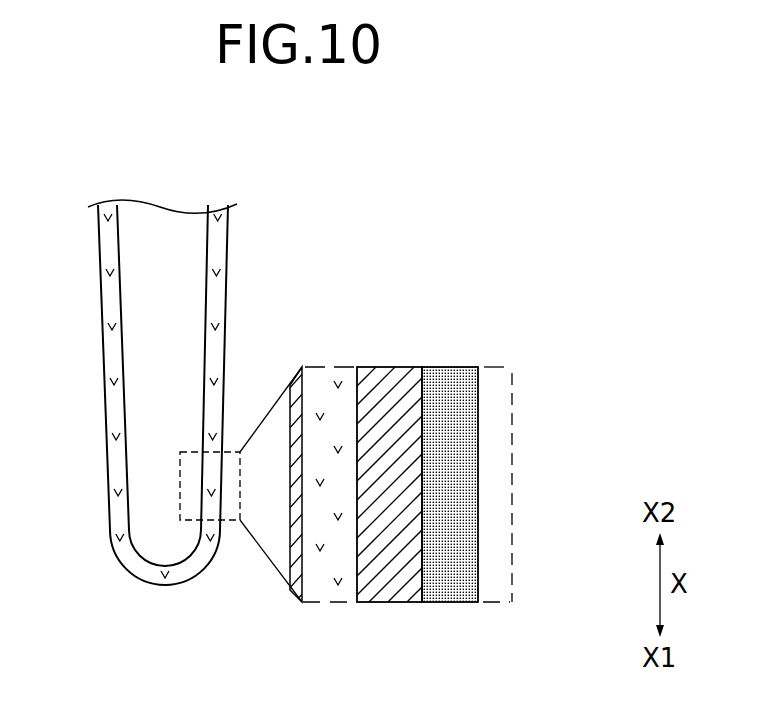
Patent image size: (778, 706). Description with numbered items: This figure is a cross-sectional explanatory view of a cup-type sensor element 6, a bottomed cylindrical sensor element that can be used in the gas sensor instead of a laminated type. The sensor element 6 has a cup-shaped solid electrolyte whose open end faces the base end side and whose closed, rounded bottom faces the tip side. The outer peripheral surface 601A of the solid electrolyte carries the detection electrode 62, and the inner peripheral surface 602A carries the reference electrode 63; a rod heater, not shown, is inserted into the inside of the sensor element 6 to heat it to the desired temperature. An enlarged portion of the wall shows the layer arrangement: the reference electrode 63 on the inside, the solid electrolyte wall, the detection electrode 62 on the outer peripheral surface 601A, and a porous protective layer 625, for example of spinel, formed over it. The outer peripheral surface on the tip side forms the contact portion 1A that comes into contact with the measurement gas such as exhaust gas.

The sensor element 6 is at (220, 366).
The outer peripheral surface 601A is at (228, 245).
The inner peripheral surface 602A is at (120, 270).
The contact portion 1A is at (114, 562).
The reference electrode 63 is at (290, 425).
The detection electrode 62 is at (393, 562).
The protective layer 625 is at (450, 395).